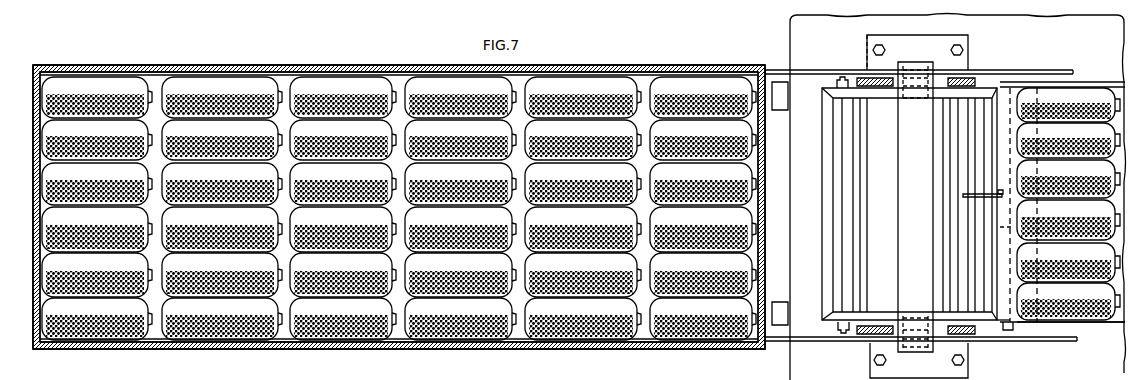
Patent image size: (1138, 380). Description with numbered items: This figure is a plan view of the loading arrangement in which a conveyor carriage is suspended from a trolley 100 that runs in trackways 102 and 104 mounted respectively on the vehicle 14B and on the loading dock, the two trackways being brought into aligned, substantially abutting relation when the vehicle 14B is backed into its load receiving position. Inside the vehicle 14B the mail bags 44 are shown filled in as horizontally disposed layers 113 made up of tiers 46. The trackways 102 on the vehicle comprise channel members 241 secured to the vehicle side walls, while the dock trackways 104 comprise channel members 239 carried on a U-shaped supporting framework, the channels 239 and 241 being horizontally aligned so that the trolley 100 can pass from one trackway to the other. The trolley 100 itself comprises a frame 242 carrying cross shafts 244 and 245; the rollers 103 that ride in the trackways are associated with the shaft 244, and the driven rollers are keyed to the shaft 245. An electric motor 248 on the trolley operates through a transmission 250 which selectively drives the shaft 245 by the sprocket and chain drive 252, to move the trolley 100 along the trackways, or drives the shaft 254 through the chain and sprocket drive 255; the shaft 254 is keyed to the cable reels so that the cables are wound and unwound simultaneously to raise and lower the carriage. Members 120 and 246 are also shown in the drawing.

The bags 44 is at (338, 138).
The trackway 102 is at (684, 72).
The channel member 241 is at (585, 72).
The trolley 100 is at (399, 364).
The roller 103 is at (399, 222).
The layer 113 is at (190, 222).
The vehicle 14B is at (681, 222).
The tier 46 is at (1098, 79).
The channel member 239 is at (1066, 72).
The trackway 104 is at (982, 71).
The drive shaft 120 is at (828, 326).
The cross shaft 244 is at (842, 116).
The frame 242 is at (831, 82).
The shaft 254 is at (982, 110).
The chain and sprocket drive 255 is at (980, 194).
The sprocket and chain drive 252 is at (1034, 181).
The transmission 250 is at (1040, 221).
The cross shaft 245 is at (993, 268).
The electric motor 248 is at (1003, 300).
The shelf 246 is at (1052, 323).